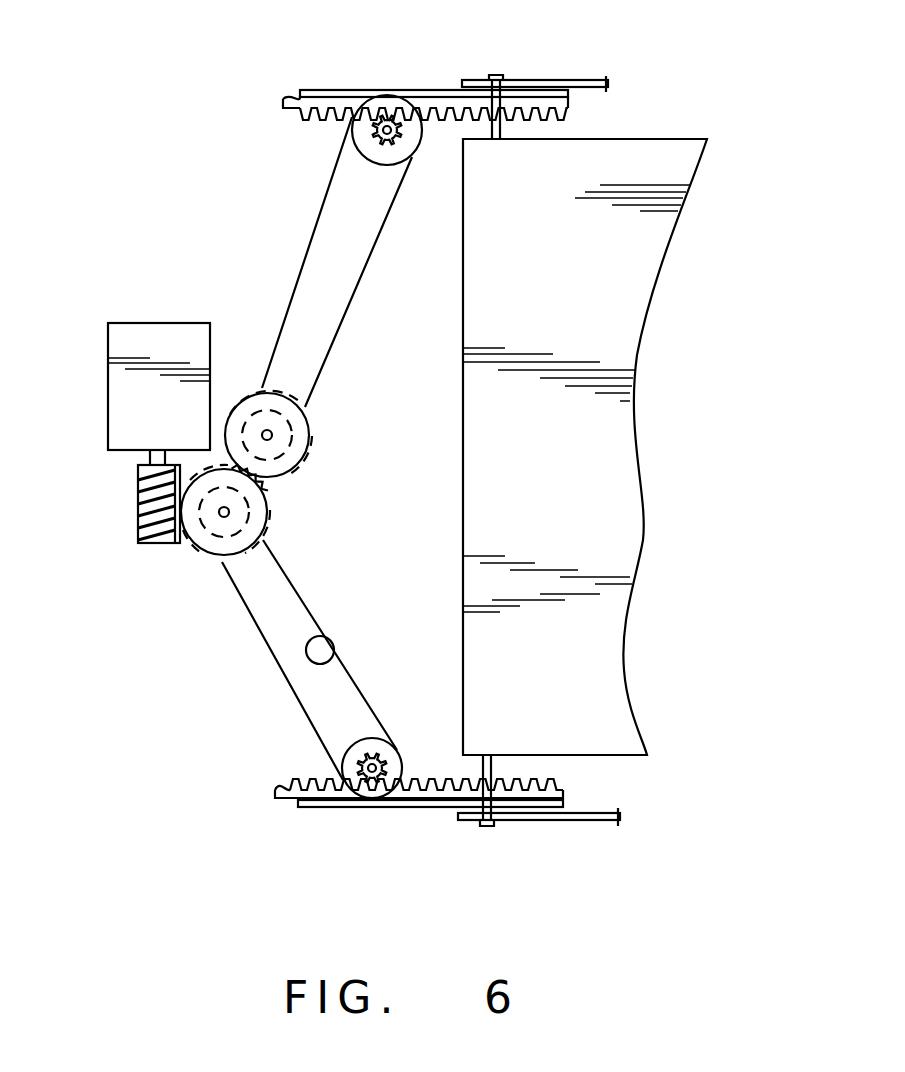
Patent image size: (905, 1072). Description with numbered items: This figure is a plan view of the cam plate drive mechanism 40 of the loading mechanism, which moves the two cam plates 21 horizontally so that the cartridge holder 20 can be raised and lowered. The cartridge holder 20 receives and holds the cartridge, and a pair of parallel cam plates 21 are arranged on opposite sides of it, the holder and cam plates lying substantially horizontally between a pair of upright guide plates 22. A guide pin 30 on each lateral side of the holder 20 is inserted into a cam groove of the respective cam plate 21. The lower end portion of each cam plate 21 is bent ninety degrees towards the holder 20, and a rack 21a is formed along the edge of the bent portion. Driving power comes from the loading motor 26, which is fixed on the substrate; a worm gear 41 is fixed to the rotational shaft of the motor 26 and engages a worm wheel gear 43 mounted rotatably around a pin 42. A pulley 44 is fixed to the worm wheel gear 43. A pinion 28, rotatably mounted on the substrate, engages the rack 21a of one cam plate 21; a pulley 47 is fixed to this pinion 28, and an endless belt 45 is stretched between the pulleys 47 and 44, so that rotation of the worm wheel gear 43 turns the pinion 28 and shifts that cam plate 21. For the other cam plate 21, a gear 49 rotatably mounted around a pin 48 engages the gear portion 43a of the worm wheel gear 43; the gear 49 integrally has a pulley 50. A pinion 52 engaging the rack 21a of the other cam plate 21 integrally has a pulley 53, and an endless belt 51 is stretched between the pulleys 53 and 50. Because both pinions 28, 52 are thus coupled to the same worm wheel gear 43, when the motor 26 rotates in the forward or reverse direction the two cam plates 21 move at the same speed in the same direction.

The cartridge holder 20 is at (632, 558).
The cam plate 21 is at (320, 90).
The rack 21a is at (303, 120).
The guide plate 22 is at (565, 80).
The loading motor 26 is at (118, 396).
The pinion 28 is at (388, 762).
The guide pin 30 is at (500, 130).
The cam plate drive mechanism 40 is at (199, 656).
The worm gear 41 is at (138, 516).
The pin 42 is at (226, 518).
The worm wheel gear 43 is at (196, 548).
The gear portion 43a is at (265, 510).
The pulley 44 is at (268, 548).
The endless belt 45 is at (318, 632).
The pulley 47 is at (365, 742).
The pin 48 is at (272, 439).
The gear 49 is at (310, 432).
The pulley 50 is at (290, 478).
The endless belt 51 is at (372, 251).
The pinion 52 is at (372, 138).
The pulley 53 is at (405, 152).